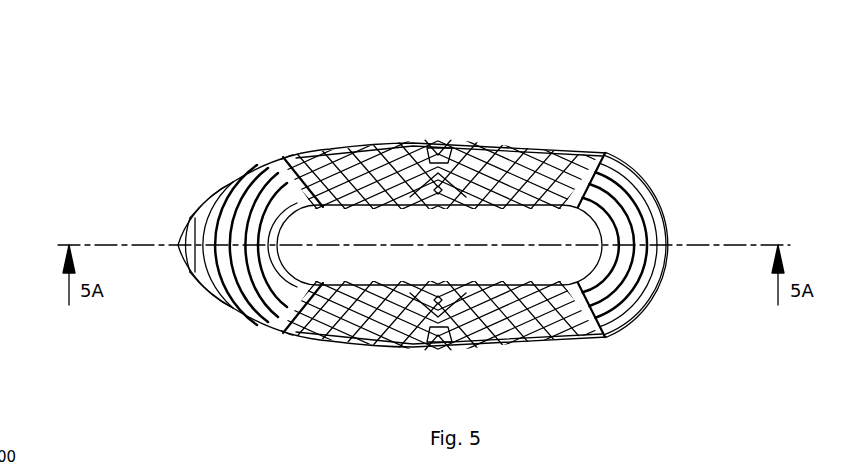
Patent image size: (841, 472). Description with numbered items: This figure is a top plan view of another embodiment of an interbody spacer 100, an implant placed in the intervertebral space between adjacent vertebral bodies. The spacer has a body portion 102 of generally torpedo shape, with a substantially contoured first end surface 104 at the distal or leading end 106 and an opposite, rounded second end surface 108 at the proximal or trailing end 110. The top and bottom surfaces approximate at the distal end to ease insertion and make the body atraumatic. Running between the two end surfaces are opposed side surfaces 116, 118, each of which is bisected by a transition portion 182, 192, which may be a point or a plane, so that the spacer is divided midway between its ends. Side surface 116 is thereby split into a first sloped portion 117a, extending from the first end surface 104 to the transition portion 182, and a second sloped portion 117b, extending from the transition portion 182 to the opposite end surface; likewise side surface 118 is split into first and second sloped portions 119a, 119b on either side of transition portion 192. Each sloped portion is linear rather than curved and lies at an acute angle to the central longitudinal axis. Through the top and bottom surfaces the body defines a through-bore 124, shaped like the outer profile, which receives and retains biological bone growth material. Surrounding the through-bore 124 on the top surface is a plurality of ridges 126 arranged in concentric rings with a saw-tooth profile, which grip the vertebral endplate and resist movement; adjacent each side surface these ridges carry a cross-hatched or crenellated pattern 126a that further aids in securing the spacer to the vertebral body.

The interbody spacer 100 is at (646, 128).
The body portion 102 is at (577, 342).
The first end surface 104 is at (203, 222).
The distal or leading end 106 is at (177, 270).
The second end surface 108 is at (660, 198).
The proximal or trailing end 110 is at (689, 275).
The side surface 116 is at (334, 152).
The first sloped portion 117a is at (292, 152).
The second sloped portion 117b is at (545, 150).
The side surface 118 is at (360, 343).
The first sloped portion 119a is at (292, 336).
The second sloped portion 119b is at (532, 344).
The through-bore 124 is at (452, 237).
The plurality of ridges 126 is at (220, 275).
The cross-hatched or crenellated pattern 126a is at (483, 146).
The transition portion 182 is at (437, 143).
The transition portion 192 is at (446, 352).